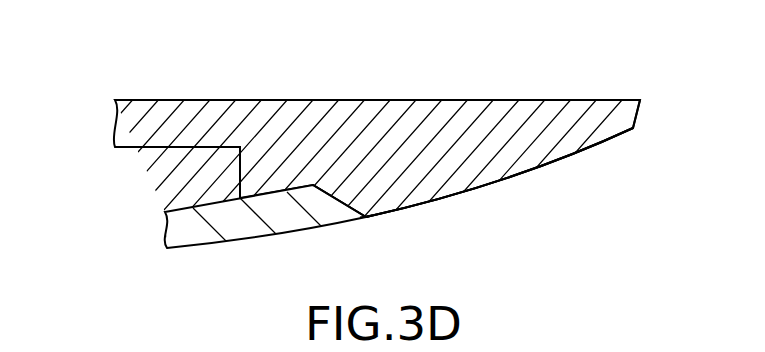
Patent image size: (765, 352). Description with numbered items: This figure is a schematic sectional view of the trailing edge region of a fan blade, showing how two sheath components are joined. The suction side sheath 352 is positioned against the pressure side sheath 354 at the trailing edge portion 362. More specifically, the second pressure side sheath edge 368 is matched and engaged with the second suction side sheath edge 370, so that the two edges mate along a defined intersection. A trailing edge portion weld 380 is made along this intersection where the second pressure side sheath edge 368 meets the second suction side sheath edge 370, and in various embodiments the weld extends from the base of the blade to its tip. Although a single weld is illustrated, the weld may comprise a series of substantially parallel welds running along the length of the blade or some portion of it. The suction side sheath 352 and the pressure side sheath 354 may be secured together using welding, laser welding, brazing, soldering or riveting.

The suction side sheath 352 is at (187, 247).
The pressure side sheath 354 is at (422, 112).
The trailing edge portion 362 is at (562, 117).
The second pressure side sheath edge 368 is at (388, 203).
The second suction side sheath edge 370 is at (328, 213).
The trailing edge portion weld 380 is at (373, 213).